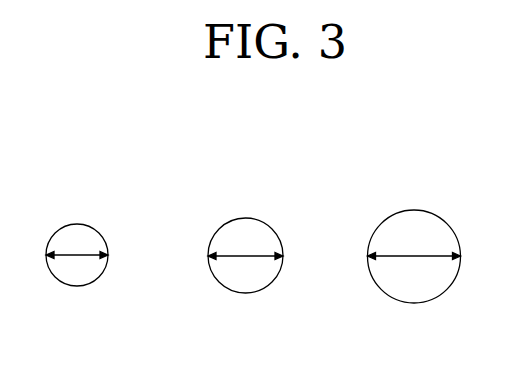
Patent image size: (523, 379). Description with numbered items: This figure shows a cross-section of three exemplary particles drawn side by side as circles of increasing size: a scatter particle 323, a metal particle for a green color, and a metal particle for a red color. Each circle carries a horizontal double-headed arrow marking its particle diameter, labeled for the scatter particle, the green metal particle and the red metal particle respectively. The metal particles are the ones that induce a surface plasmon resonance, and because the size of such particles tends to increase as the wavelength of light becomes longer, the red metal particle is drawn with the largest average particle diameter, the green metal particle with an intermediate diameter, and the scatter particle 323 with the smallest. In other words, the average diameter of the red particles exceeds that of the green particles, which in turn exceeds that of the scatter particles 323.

The scatter particle 323 is at (92, 213).